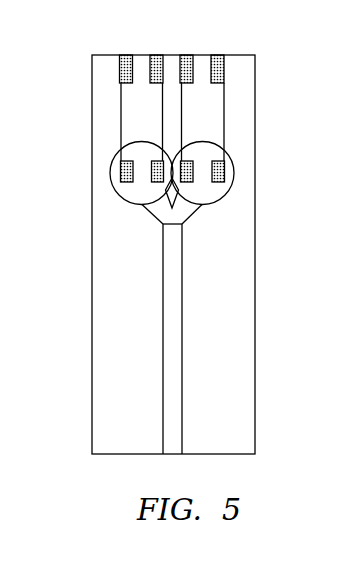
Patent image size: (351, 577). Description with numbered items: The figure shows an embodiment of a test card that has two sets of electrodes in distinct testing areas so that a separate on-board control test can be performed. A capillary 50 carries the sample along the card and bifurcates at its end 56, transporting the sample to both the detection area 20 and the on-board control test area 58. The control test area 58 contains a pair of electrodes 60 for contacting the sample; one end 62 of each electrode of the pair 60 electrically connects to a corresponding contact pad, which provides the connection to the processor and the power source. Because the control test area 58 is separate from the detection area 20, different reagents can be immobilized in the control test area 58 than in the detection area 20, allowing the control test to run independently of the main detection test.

The detection area 20 is at (100, 183).
The capillary 50 is at (173, 320).
The end of the capillary 56 is at (175, 231).
The on-board control test area 58 is at (228, 193).
The pair of electrodes 60 is at (223, 171).
The end of the electrode 62 is at (221, 55).